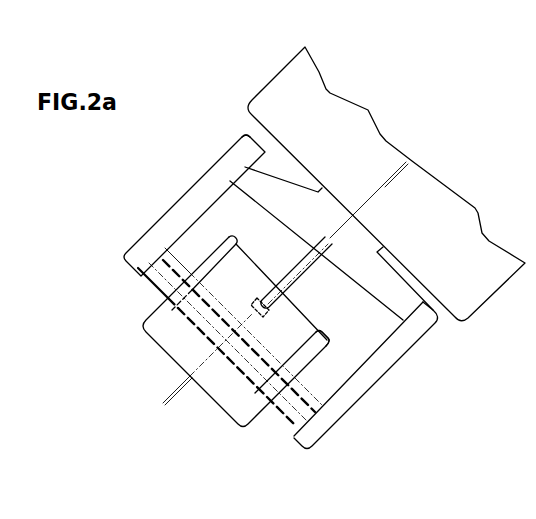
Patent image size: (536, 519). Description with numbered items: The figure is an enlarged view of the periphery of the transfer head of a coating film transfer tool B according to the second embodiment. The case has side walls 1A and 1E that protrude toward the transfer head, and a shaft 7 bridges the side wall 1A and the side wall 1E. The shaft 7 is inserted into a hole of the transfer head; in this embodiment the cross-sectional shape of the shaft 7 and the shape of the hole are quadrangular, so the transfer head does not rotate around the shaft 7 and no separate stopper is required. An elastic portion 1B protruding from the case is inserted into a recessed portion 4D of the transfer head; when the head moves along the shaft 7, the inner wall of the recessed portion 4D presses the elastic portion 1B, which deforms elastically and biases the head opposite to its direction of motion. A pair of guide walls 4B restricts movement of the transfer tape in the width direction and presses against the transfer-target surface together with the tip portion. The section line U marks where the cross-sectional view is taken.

The side wall 1A is at (376, 405).
The elastic portion 1B is at (316, 276).
The side wall 1E is at (186, 176).
The guide walls 4B is at (197, 252).
The recessed portion 4D is at (266, 288).
The shaft 7 is at (147, 284).
The coating film transfer tool B is at (248, 120).
The section line U- U is at (172, 376).